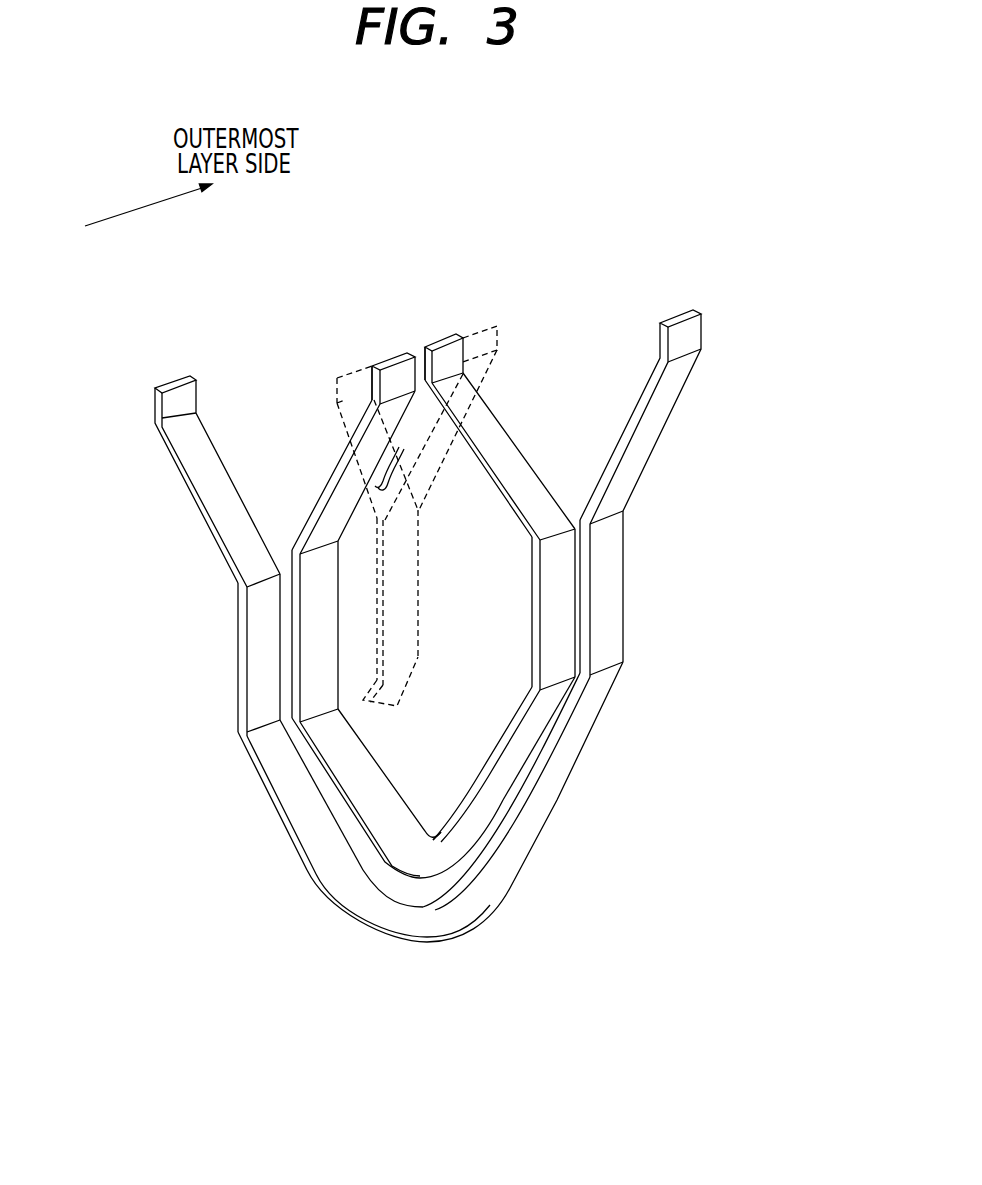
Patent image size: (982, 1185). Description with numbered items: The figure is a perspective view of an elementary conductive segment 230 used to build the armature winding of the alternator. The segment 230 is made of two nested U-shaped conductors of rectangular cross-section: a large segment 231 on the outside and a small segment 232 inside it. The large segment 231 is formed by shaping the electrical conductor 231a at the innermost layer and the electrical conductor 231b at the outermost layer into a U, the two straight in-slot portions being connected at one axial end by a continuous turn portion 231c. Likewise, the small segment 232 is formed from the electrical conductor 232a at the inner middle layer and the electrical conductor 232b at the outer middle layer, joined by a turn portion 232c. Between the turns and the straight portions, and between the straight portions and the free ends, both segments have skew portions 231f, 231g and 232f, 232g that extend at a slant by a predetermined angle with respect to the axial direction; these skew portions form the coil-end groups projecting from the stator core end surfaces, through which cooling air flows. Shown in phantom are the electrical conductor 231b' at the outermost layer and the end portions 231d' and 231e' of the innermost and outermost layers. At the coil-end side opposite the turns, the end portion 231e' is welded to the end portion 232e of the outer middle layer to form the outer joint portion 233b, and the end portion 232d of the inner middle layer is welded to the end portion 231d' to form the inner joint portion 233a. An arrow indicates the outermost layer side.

The elementary conductive segment 230 is at (333, 916).
The large segment 231 is at (664, 443).
The electrical conductor at innermost layer 231a is at (260, 622).
The electrical conductor at outermost layer 231b is at (663, 594).
The electrical conductor at outermost layer 231b' is at (534, 608).
The turn portion 231c is at (403, 918).
The end portion of innermost layer 231d' is at (321, 417).
The end portion of outermost layer 231e' is at (473, 389).
The skew portion 231f is at (300, 805).
The skew portion 231g is at (190, 452).
The small segment 232 is at (568, 460).
The electrical conductor at inner middle layer 232a is at (317, 670).
The electrical conductor at outer middle layer 232b is at (560, 662).
The turn portion 232c is at (428, 861).
The end portion of inner middle layer 232d is at (395, 377).
The end portion of outer middle layer 232e is at (448, 357).
The skew portion 232f is at (503, 768).
The skew portion 232g is at (347, 493).
The inner joint portion 233a is at (363, 357).
The outer joint portion 233b is at (470, 298).